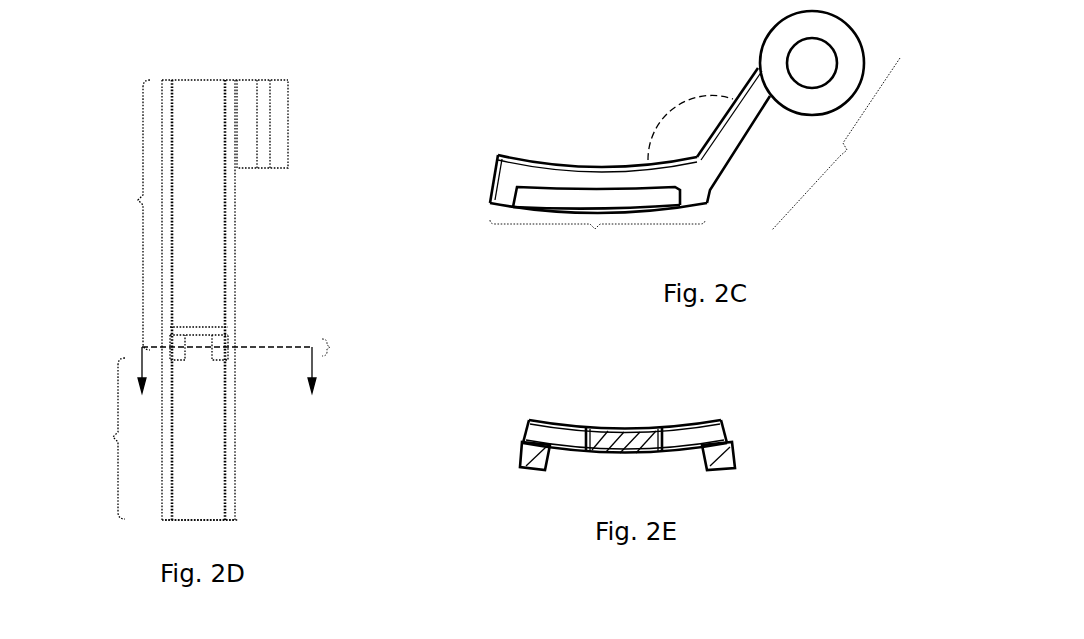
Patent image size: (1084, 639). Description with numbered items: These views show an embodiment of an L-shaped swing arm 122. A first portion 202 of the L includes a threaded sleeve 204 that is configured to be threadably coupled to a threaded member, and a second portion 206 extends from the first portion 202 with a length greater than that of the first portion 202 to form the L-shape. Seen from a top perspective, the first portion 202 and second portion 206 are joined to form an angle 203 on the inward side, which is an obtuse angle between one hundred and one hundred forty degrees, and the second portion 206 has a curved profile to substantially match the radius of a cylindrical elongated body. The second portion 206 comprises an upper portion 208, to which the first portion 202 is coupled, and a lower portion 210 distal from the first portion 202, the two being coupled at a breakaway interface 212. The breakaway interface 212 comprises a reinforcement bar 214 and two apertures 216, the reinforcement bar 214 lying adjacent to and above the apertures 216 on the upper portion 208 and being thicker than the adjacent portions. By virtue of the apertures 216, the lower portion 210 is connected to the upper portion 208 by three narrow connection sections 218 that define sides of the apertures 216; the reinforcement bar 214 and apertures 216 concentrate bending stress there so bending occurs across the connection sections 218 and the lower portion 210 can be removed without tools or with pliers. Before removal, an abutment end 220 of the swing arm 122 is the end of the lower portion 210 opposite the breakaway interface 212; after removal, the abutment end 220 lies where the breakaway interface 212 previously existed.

In FIG. 2D, the swing arm 122 is at (324, 80).
In FIG. 2C, the swing arm 122 is at (584, 86).
In FIG. 2D, the first portion 202 is at (260, 92).
In FIG. 2C, the first portion 202 is at (836, 144).
In FIG. 2C, the angle 203 is at (676, 112).
In FIG. 2C, the threaded sleeve 204 is at (834, 53).
In FIG. 2D, the second portion 206 is at (199, 103).
In FIG. 2C, the second portion 206 is at (598, 214).
In FIG. 2D, the upper portion 208 is at (115, 215).
In FIG. 2D, the lower portion 210 is at (95, 438).
In FIG. 2D, the breakaway interface 212 is at (257, 375).
In FIG. 2D, the reinforcement bar 214 is at (192, 332).
In FIG. 2C, the reinforcement bar 214 is at (548, 200).
In FIG. 2D, the apertures 216 is at (172, 343).
In FIG. 2E, the apertures 216 is at (568, 436).
In FIG. 2E, the connection sections 218 is at (627, 430).
In FIG. 2D, the abutment end 220 is at (218, 520).
In FIG. 2C, the abutment end 220 is at (725, 80).